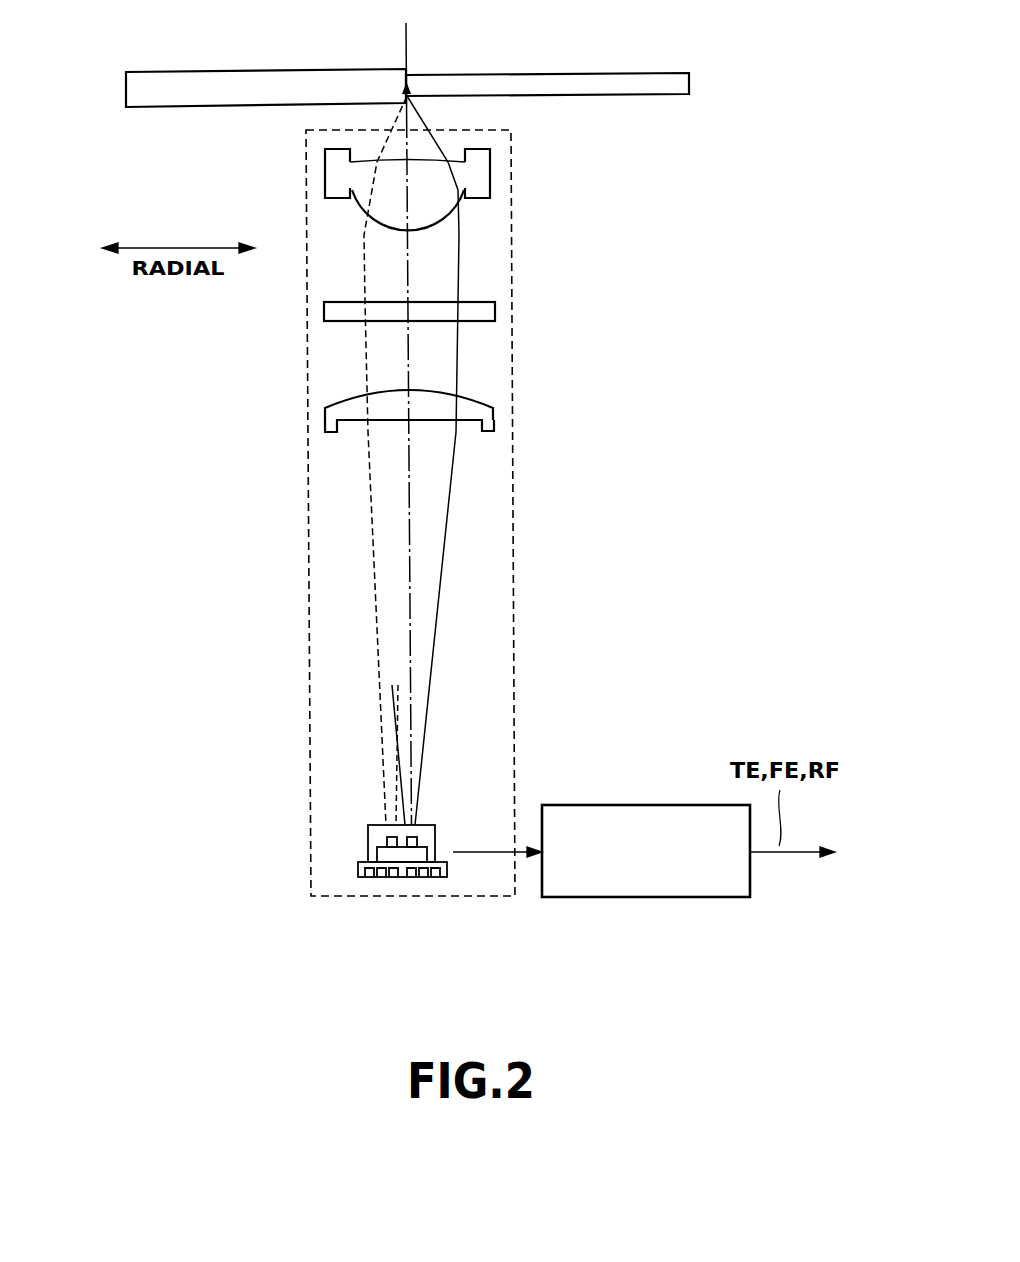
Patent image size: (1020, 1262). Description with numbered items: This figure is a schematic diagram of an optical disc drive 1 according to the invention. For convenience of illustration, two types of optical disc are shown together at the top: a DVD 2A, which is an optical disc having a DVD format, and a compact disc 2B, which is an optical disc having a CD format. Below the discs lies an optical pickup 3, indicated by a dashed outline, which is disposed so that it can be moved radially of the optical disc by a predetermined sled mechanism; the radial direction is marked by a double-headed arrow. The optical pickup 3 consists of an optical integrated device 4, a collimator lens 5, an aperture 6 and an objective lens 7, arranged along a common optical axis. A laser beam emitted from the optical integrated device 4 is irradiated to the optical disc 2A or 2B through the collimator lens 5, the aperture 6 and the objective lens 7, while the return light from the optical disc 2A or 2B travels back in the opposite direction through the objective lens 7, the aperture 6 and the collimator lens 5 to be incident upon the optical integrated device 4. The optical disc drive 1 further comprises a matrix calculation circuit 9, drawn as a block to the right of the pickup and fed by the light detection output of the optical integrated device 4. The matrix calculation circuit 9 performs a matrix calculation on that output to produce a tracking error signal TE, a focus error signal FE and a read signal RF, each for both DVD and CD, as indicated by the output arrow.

The optical disc drive 1 is at (237, 677).
The DVD 2A is at (524, 75).
The compact disc 2B is at (243, 71).
The optical pickup 3 is at (306, 497).
The optical integrated device 4 is at (367, 832).
The collimator lens 5 is at (326, 409).
The aperture 6 is at (325, 309).
The objective lens 7 is at (325, 175).
The matrix calculation circuit 9 is at (582, 805).